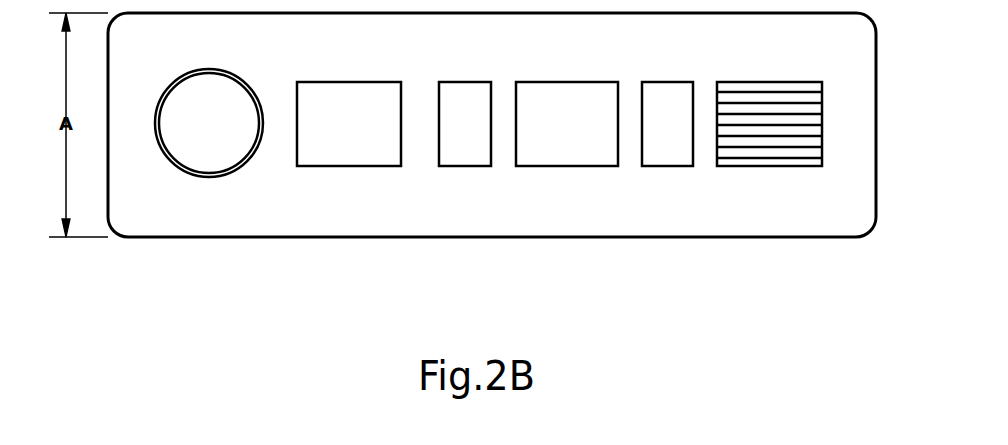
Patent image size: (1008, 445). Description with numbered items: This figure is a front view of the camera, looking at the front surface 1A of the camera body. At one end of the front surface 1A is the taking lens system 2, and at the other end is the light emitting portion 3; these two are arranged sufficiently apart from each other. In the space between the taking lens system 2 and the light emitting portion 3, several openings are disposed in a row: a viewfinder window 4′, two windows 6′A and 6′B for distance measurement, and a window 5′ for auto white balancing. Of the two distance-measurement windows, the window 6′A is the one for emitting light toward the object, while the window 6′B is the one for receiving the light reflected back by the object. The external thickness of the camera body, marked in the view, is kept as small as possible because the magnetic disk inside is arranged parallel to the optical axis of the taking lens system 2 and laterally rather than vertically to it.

The front surface 1A is at (390, 220).
The taking lens system 2 is at (202, 160).
The viewfinder window 4′ is at (334, 147).
The window for distance measurement 6′A is at (463, 157).
The window for auto white balancing 5′ is at (570, 157).
The window for distance measurement 6′B is at (673, 157).
The light emitting portion 3 is at (799, 155).